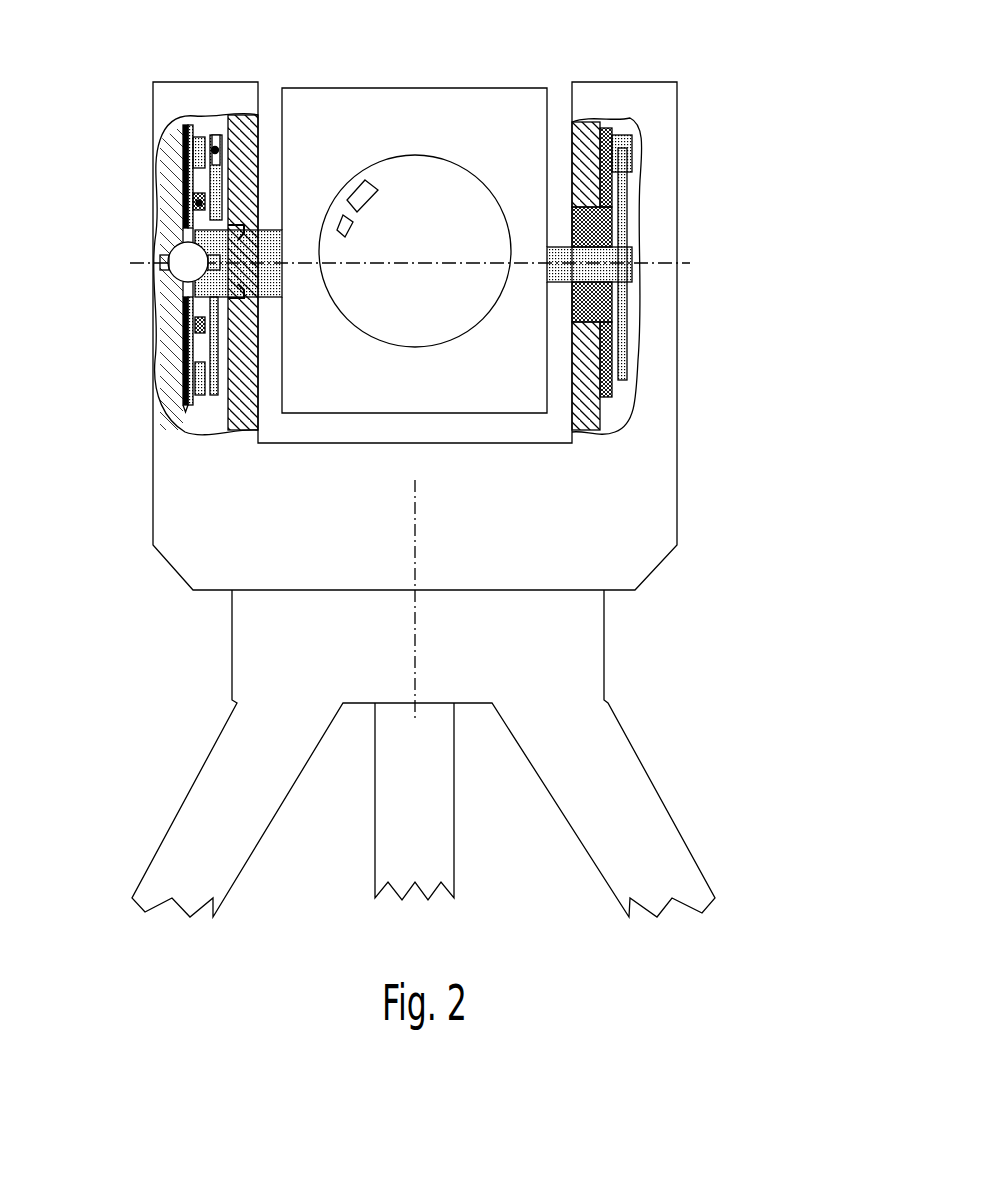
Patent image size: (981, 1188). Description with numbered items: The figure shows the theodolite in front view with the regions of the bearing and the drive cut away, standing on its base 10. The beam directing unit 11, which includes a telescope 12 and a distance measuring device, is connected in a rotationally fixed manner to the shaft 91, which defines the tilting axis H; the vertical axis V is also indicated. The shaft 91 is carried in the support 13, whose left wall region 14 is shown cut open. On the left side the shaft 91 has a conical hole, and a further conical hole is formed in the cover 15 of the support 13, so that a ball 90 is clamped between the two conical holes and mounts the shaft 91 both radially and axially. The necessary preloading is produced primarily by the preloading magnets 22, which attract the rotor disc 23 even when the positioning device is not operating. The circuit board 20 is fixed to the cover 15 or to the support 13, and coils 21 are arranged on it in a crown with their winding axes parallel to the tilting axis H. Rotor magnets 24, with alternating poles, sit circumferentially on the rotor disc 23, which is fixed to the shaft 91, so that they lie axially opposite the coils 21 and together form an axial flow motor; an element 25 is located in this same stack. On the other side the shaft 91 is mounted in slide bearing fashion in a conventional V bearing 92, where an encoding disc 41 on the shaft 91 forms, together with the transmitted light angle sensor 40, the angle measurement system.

The support base with legs 10 is at (586, 665).
The beam directing unit 11 is at (468, 110).
The telescope 12 is at (413, 180).
The support 13 is at (653, 520).
The left housing wall section 14 is at (240, 430).
The cover 15 is at (180, 134).
The circuit board 20 is at (190, 412).
The coils 21 is at (195, 372).
The preloading magnets 22 is at (180, 208).
The rotor disc 23 is at (222, 207).
The rotor magnets 24 is at (215, 150).
The upper bearing element 25 is at (195, 152).
The transmitted light angle sensor 40 is at (627, 137).
The encoding disc 41 is at (627, 192).
The ball 90 is at (183, 272).
The shaft 91 is at (245, 413).
The V bearing 92 is at (572, 222).
The tilting axis H is at (690, 263).
The vertical axis V is at (415, 615).